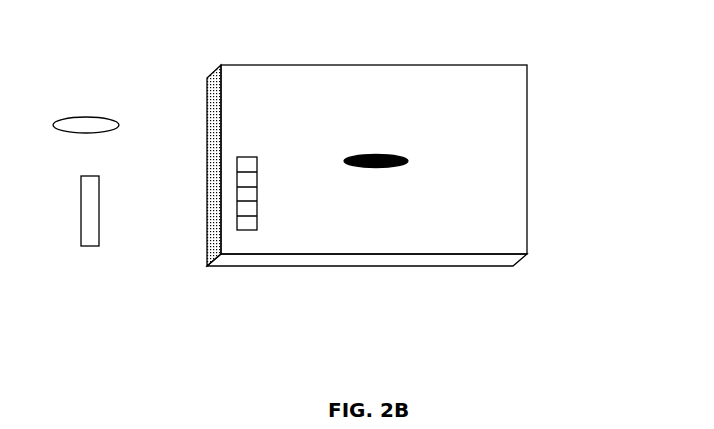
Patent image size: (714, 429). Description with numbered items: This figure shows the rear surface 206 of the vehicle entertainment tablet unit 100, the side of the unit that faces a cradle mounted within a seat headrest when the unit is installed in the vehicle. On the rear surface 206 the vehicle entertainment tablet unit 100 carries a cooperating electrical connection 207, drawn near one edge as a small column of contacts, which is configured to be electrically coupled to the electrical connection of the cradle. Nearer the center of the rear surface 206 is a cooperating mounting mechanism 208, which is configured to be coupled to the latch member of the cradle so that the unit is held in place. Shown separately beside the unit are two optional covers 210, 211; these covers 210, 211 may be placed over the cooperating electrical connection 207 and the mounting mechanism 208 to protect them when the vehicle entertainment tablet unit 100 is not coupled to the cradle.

The vehicle entertainment tablet unit 100 is at (488, 70).
The rear surface 206 is at (468, 153).
The cooperating electrical connection 207 is at (237, 200).
The cooperating mounting mechanism 208 is at (372, 152).
The cover 210 is at (92, 118).
The cover 211 is at (81, 233).